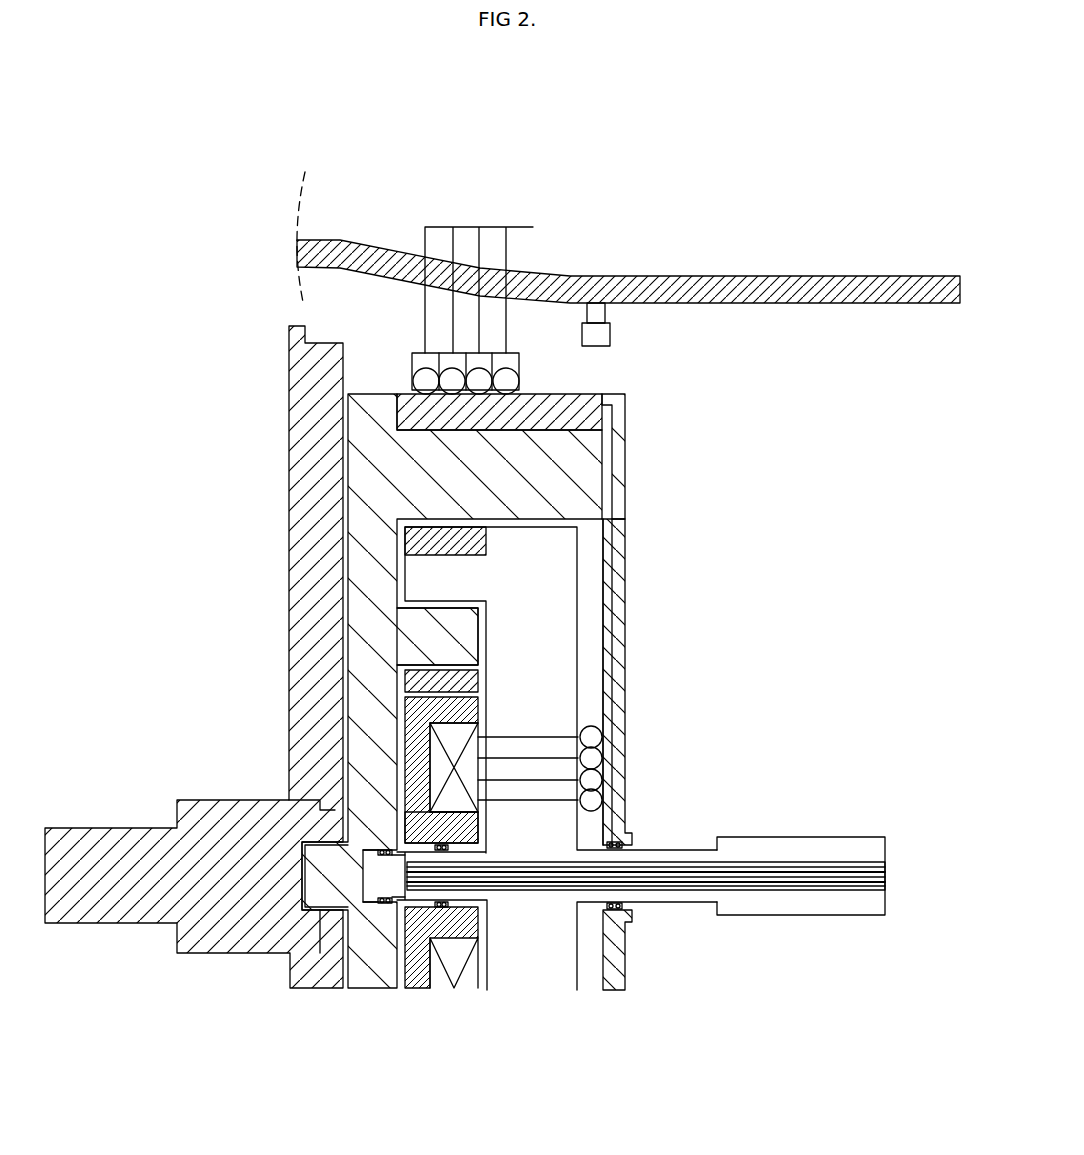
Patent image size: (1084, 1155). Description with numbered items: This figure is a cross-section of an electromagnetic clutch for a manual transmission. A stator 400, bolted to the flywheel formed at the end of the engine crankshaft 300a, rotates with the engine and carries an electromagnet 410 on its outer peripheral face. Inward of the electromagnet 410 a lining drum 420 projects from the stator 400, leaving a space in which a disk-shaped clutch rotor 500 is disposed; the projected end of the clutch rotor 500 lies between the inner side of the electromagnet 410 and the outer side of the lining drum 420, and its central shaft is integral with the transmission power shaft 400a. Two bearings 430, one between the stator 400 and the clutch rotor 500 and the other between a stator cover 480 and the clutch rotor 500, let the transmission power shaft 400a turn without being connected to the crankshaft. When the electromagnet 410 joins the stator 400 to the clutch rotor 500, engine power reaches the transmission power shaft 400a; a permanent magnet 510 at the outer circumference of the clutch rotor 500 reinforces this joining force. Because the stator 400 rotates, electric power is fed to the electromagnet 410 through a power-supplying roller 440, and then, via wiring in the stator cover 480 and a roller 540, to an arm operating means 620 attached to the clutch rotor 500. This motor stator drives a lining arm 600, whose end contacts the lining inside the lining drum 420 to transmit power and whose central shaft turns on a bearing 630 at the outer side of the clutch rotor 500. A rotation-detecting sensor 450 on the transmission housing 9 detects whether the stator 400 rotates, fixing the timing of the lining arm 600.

The transmission housing 9 is at (655, 276).
The engine crankshaft 300a is at (83, 835).
The stator 400 is at (514, 692).
The transmission power shaft 400a is at (667, 870).
The electromagnet 410 is at (583, 392).
The lining drum 420 is at (465, 653).
The bearings 430 is at (378, 850).
The power-supplying roller 440 is at (510, 385).
The rotation-detecting sensor 450 is at (602, 311).
The stator cover 480 is at (618, 492).
The clutch rotor 500 is at (555, 586).
The permanent magnet 510 is at (480, 547).
The roller 540 is at (602, 758).
The lining arm 600 is at (466, 808).
The arm operating means 620 is at (357, 736).
The bearing 630 is at (435, 842).